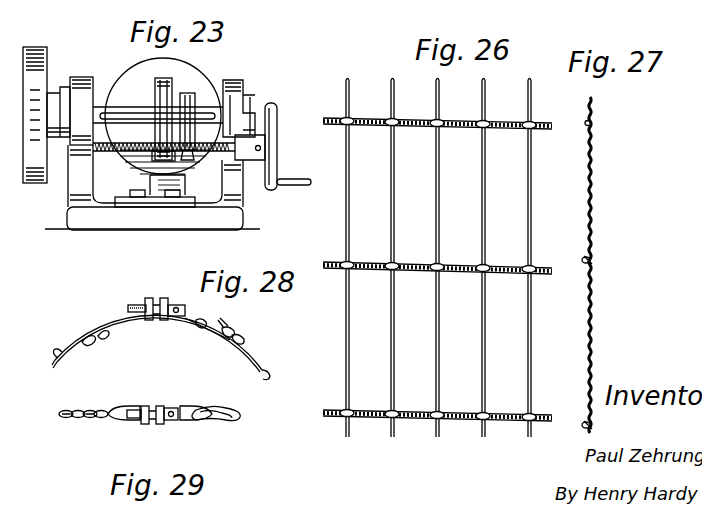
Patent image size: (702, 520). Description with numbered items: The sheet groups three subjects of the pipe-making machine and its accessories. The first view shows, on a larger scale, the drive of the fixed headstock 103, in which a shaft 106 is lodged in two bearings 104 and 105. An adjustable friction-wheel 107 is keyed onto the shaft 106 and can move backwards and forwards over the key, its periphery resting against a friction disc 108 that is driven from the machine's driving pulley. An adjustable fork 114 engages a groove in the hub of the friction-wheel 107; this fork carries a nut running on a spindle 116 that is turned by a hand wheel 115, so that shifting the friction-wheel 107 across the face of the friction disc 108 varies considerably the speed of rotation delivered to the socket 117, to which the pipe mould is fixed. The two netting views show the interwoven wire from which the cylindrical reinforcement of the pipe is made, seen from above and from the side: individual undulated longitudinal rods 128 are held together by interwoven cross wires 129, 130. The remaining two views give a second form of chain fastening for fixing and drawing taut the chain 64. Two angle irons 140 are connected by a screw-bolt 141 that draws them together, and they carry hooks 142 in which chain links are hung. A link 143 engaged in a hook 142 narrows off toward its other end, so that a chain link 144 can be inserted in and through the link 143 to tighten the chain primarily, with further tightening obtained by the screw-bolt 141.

In FIG. 23, the fixed headstock 103 is at (75, 213).
In FIG. 23, the bearing 104 is at (243, 84).
In FIG. 23, the bearing 105 is at (80, 77).
In FIG. 23, the shaft 106 is at (125, 113).
In FIG. 23, the adjustable friction-wheel 107 is at (166, 78).
In FIG. 23, the friction disc 108 is at (130, 77).
In FIG. 23, the adjustable fork 114 is at (190, 93).
In FIG. 23, the hand wheel 115 is at (278, 162).
In FIG. 23, the spindle 116 is at (118, 152).
In FIG. 23, the socket 117 is at (32, 46).
In FIG. 26, the undulated longitudinal rods 128 is at (437, 204).
In FIG. 27, the undulated longitudinal rods 128 is at (588, 210).
In FIG. 26, the interwoven cross wire 129 is at (438, 272).
In FIG. 27, the interwoven cross wire 129 is at (594, 270).
In FIG. 26, the interwoven cross wire 130 is at (433, 262).
In FIG. 27, the interwoven cross wire 130 is at (592, 262).
In FIG. 28, the chain 64 is at (55, 356).
In FIG. 29, the chain 64 is at (64, 410).
In FIG. 28, the angle irons 140 is at (120, 320).
In FIG. 29, the angle irons 140 is at (168, 408).
In FIG. 28, the screw-bolt 141 is at (138, 305).
In FIG. 29, the screw-bolt 141 is at (152, 424).
In FIG. 28, the hooks 142 is at (98, 318).
In FIG. 29, the hooks 142 is at (104, 410).
In FIG. 28, the link 143 is at (207, 326).
In FIG. 29, the link 143 is at (240, 418).
In FIG. 28, the chain link 144 is at (235, 332).